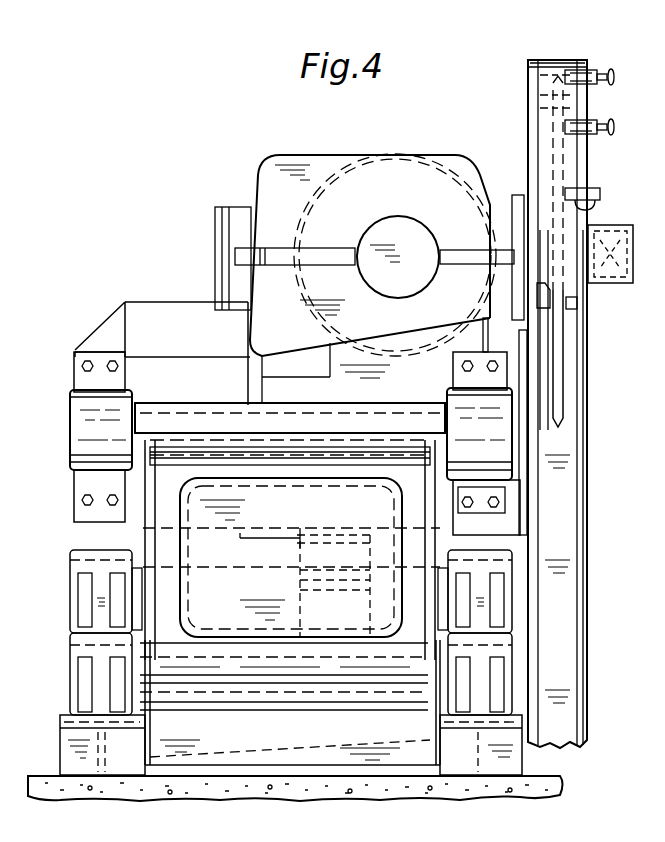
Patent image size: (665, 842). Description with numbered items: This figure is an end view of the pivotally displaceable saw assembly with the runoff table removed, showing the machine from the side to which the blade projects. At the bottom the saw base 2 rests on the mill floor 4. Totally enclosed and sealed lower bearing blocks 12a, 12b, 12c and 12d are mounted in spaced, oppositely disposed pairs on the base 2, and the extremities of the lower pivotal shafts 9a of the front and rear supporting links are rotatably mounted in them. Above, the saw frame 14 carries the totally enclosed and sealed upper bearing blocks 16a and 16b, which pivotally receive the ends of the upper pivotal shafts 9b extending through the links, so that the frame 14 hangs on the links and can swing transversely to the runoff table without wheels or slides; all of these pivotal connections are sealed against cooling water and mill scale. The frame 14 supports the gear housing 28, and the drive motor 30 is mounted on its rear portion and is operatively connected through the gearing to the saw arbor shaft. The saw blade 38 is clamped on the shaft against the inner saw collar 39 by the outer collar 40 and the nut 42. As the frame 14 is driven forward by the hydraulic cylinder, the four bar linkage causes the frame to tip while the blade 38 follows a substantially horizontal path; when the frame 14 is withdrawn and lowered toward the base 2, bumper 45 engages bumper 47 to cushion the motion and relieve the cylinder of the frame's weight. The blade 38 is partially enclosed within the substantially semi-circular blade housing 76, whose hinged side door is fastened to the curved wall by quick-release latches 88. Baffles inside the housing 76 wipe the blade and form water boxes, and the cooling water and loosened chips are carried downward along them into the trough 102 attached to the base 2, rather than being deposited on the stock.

The saw base 2 is at (65, 752).
The mill floor 4 is at (560, 782).
The lower pivotal shaft 9a is at (292, 690).
The upper pivotal shaft 9b is at (338, 425).
The lower bearing block 12a is at (508, 684).
The lower bearing block 12b is at (80, 650).
The lower bearing block 12c is at (508, 593).
The lower bearing block 12d is at (72, 592).
The saw frame 14 is at (523, 510).
The upper bearing block 16a is at (512, 468).
The upper bearing block 16b is at (72, 425).
The gear housing 28 is at (268, 180).
The drive motor 30 is at (403, 156).
The saw blade 38 is at (564, 364).
The inner saw collar 39 is at (540, 288).
The outer collar 40 is at (563, 298).
The nut 42 is at (612, 224).
The bumper 45 is at (300, 552).
The bumper 47 is at (318, 606).
The blade housing 76 is at (587, 338).
The quick-release latch 88 is at (589, 71).
The trough 102 is at (587, 622).